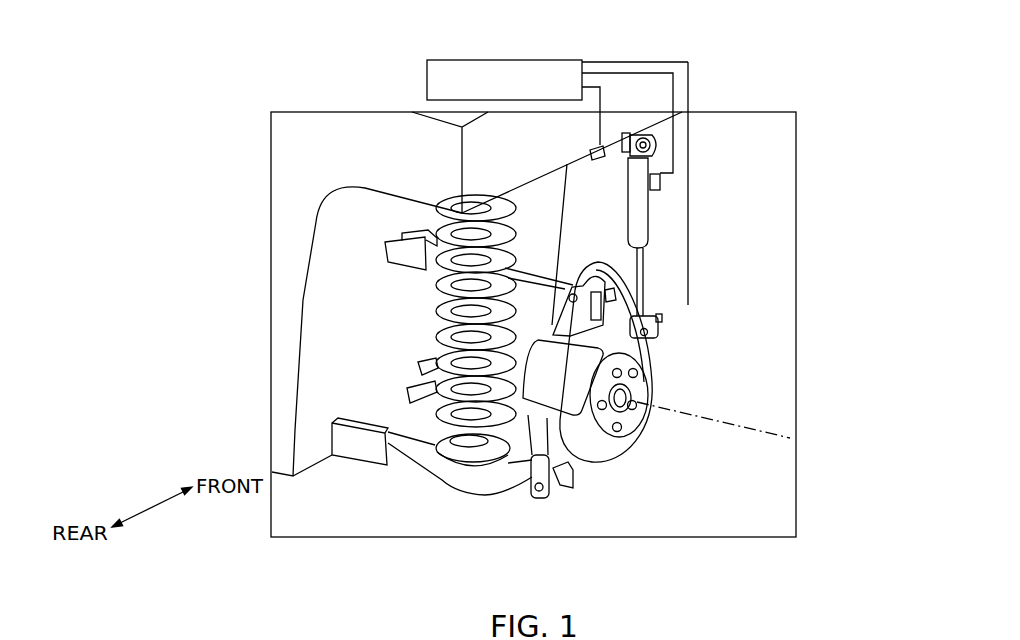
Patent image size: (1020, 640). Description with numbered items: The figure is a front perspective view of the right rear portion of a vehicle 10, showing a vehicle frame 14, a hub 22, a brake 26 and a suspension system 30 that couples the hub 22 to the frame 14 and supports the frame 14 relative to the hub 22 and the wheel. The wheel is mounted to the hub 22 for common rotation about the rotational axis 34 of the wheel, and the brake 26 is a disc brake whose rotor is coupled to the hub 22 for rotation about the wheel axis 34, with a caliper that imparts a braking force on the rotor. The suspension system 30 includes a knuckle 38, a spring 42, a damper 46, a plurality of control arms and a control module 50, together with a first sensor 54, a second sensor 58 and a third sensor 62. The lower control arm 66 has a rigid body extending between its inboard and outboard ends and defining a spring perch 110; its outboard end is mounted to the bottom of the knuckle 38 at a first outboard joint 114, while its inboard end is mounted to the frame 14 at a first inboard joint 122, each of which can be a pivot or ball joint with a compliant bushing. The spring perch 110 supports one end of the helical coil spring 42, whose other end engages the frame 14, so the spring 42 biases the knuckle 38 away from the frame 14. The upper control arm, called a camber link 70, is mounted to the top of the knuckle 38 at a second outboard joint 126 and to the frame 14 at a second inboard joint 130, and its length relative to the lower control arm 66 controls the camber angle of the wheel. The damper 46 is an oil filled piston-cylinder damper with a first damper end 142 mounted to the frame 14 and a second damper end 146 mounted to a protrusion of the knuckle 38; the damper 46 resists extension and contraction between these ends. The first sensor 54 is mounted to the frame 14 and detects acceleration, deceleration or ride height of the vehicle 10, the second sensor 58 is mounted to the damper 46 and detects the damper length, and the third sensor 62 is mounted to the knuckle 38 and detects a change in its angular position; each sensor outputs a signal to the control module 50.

The vehicle 10 is at (321, 143).
The vehicle frame 14 is at (282, 187).
The hub 22 is at (623, 418).
The brake 26 is at (573, 410).
The suspension system 30 is at (364, 343).
The rotational axis of the wheel 34 is at (767, 425).
The knuckle 38 is at (537, 468).
The spring 42 is at (437, 313).
The damper 46 is at (652, 221).
The control module 50 is at (467, 60).
The first sensor 54 is at (604, 150).
The second sensor 58 is at (662, 183).
The third sensor 62 is at (658, 330).
The lower control arm 66 is at (472, 483).
The camber link 70 is at (576, 282).
The spring perch 110 is at (447, 470).
The first outboard joint 114 is at (561, 484).
The first inboard joint 122 is at (340, 420).
The second outboard joint 126 is at (616, 290).
The second inboard joint 130 is at (388, 242).
The first damper end 142 is at (655, 140).
The second damper end 146 is at (662, 318).